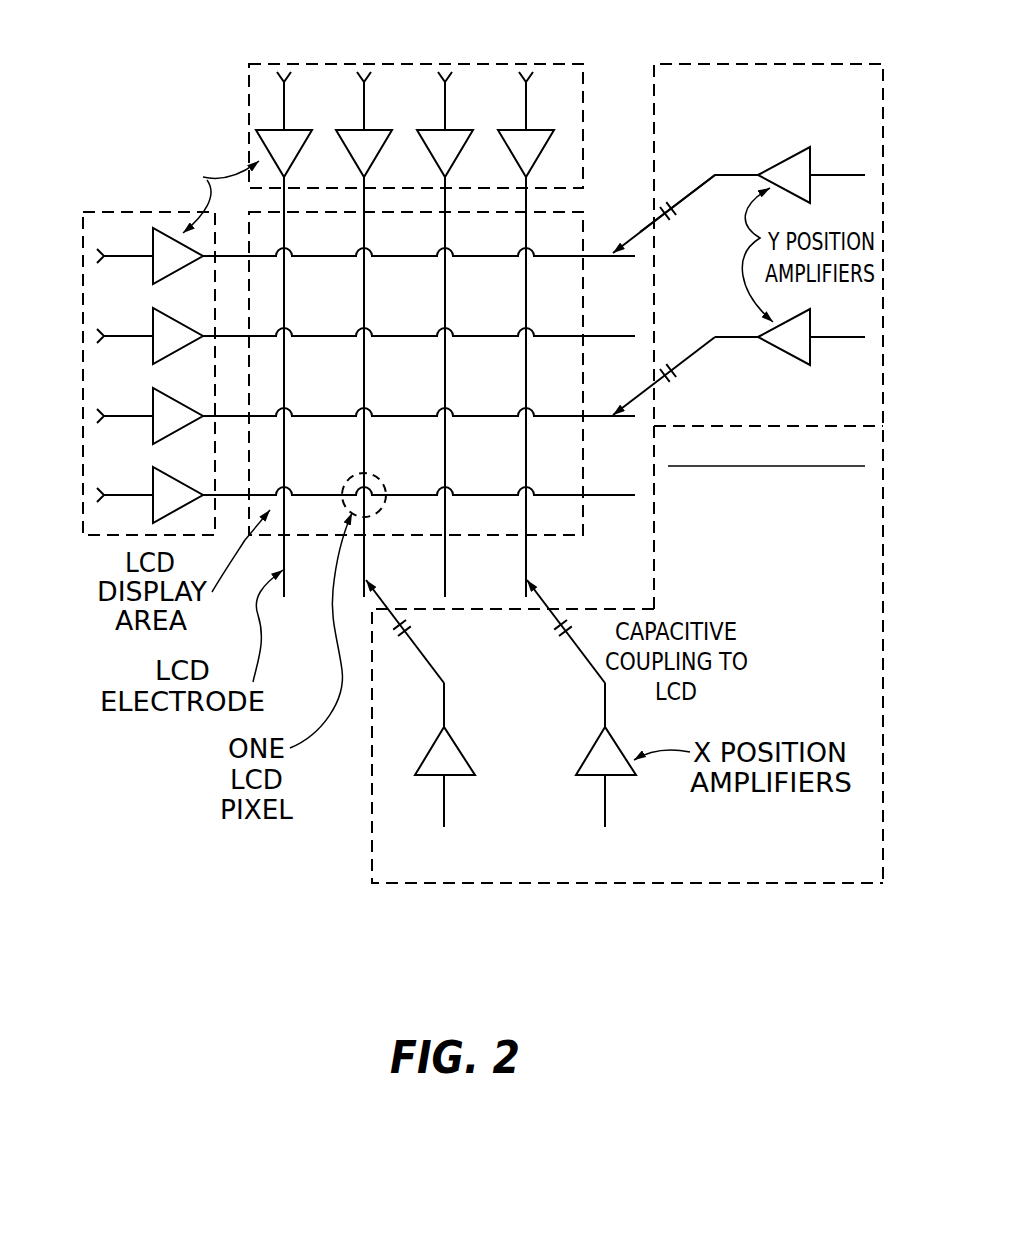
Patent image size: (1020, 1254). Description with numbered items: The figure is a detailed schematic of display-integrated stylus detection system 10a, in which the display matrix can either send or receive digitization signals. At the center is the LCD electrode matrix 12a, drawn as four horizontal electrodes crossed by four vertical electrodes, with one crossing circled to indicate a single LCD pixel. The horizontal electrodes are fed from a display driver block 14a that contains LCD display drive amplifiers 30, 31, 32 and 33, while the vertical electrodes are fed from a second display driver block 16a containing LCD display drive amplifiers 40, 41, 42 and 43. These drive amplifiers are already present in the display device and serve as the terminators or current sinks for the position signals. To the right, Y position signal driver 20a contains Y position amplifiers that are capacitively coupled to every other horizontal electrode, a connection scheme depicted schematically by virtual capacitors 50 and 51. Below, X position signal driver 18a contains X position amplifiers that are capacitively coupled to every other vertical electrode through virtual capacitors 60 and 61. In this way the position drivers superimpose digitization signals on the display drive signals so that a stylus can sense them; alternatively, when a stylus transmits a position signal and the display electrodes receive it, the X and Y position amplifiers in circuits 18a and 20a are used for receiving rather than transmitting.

The system 10a is at (220, 77).
The electrode matrix 12a is at (580, 244).
The Y display driver 14a is at (103, 274).
The X display driver 16a is at (583, 126).
The X position signal driver 18a is at (465, 883).
The Y position signal driver 20a is at (687, 64).
The LCD display drive amplifier 30 is at (150, 261).
The LCD display drive amplifier 31 is at (150, 341).
The LCD display drive amplifier 32 is at (150, 421).
The LCD display drive amplifier 33 is at (150, 500).
The LCD display drive amplifier 40 is at (283, 124).
The LCD display drive amplifier 41 is at (363, 124).
The LCD display drive amplifier 42 is at (444, 124).
The LCD display drive amplifier 43 is at (525, 124).
The virtual capacitor 50 is at (668, 198).
The virtual capacitor 51 is at (668, 360).
The virtual capacitor 60 is at (398, 636).
The virtual capacitor 61 is at (556, 638).